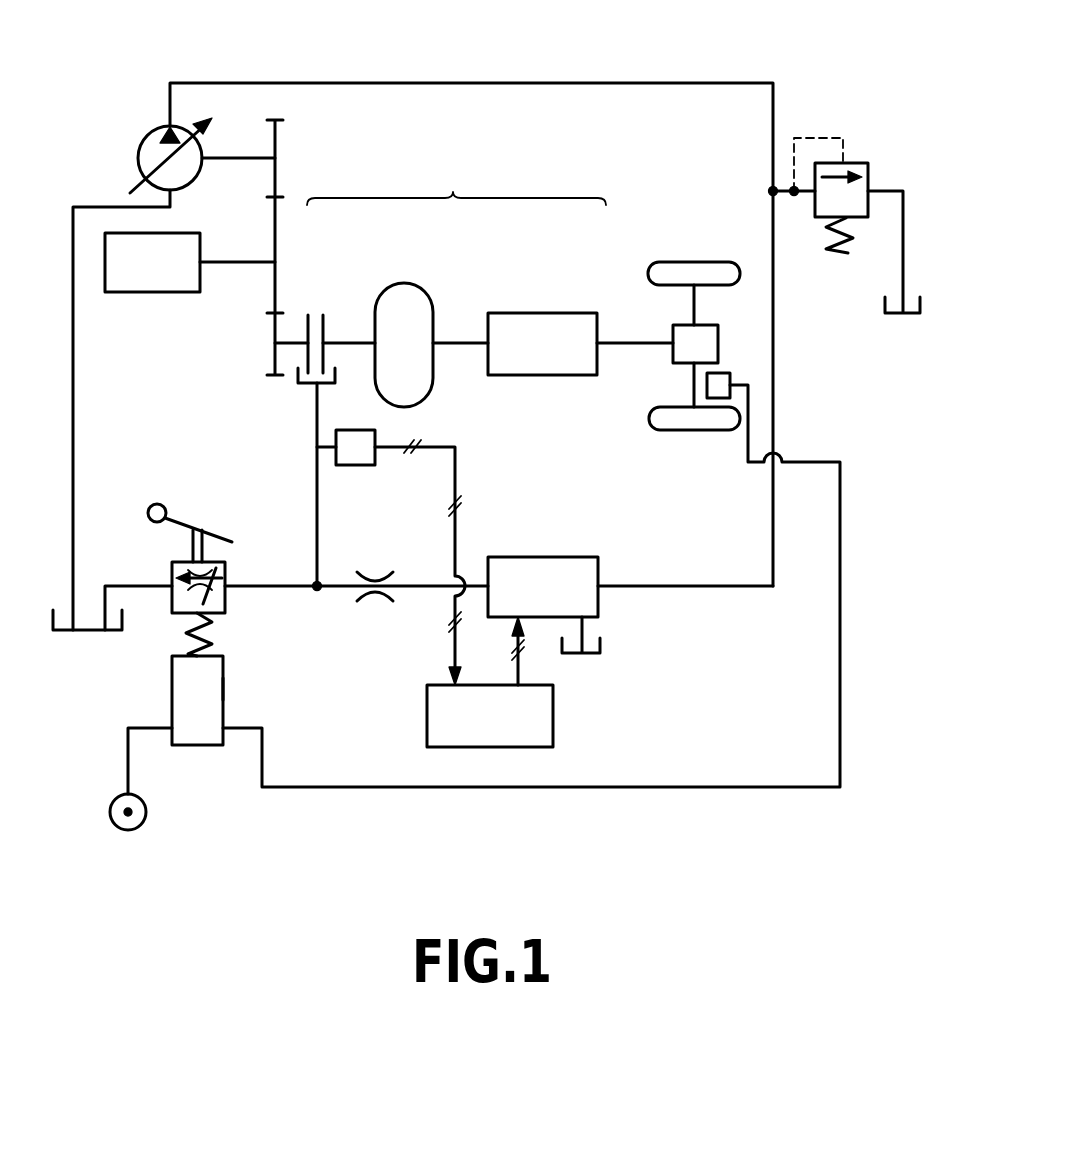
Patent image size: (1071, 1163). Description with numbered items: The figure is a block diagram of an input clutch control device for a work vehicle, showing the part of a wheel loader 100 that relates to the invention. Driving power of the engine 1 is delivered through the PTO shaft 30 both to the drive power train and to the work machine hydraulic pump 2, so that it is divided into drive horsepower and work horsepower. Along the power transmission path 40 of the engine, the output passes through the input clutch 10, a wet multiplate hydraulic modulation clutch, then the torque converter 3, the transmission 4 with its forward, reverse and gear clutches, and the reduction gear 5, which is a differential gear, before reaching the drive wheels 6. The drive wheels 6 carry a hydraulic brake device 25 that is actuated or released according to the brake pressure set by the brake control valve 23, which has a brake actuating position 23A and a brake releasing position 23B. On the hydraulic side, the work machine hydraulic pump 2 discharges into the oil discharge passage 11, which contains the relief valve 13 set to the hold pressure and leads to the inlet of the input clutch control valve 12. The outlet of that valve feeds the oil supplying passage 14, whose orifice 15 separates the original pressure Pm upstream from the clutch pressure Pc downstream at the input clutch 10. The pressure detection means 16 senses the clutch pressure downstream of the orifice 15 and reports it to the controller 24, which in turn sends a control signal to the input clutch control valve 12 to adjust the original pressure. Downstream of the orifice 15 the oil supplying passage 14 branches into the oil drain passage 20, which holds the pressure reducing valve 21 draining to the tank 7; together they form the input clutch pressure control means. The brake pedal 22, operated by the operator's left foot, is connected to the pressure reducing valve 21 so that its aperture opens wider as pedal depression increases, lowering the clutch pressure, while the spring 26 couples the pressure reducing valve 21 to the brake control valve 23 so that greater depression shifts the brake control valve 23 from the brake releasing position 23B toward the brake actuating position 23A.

The wheel loader 100 is at (687, 61).
The engine 1 is at (163, 292).
The work machine hydraulic pump 2 is at (143, 138).
The torque converter 3 is at (405, 283).
The transmission 4 is at (538, 313).
The reduction gear 5 is at (680, 325).
The drive wheels 6 is at (675, 262).
The tank 7 is at (86, 632).
The input clutch 10 is at (325, 318).
The oil discharge passage 11 is at (776, 384).
The input clutch control valve 12 is at (548, 557).
The relief valve 13 is at (855, 163).
The oil supplying passage 14 is at (428, 590).
The orifice 15 is at (374, 598).
The pressure detection means 16 is at (355, 465).
The oil drain passage 20 is at (272, 585).
The pressure reducing valve 21 is at (226, 600).
The brake pedal 22 is at (195, 528).
The brake control valve 23 is at (172, 700).
The brake actuating position 23A is at (226, 678).
The brake releasing position 23B is at (228, 735).
The controller 24 is at (553, 712).
The brake device 25 is at (727, 374).
The spring 26 is at (188, 630).
The PTO shaft 30 is at (277, 140).
The power transmission path 40 is at (456, 180).